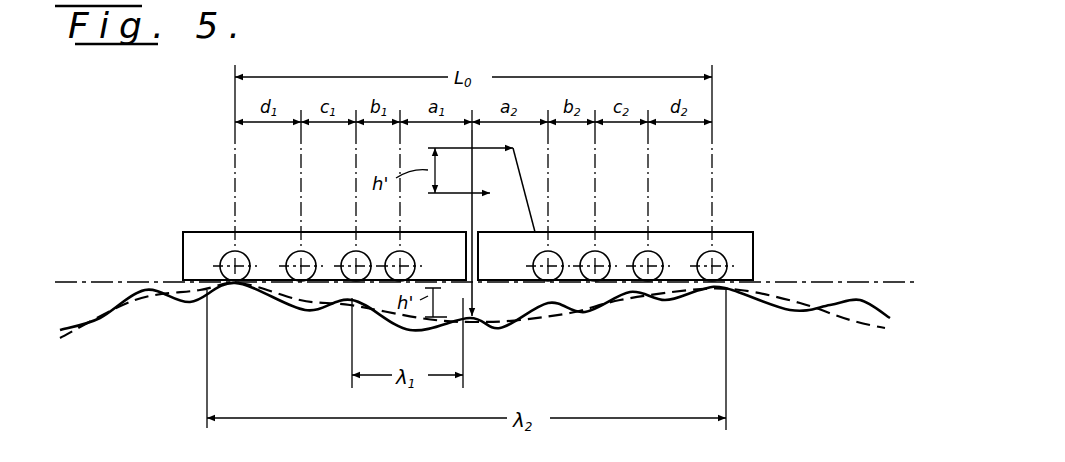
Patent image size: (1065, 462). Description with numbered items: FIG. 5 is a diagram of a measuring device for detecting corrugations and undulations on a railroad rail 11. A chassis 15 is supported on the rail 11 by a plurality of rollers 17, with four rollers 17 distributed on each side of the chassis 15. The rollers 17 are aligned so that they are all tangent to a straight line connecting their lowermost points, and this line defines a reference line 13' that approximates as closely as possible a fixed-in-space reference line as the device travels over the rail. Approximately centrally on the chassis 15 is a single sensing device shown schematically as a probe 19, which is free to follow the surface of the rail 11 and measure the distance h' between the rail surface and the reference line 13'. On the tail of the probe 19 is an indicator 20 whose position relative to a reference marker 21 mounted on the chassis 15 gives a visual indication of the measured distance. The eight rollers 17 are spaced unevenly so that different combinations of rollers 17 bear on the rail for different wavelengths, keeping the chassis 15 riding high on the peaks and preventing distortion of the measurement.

The railroad rail 11 is at (140, 283).
The reference line 13' is at (497, 239).
The chassis 15 is at (181, 243).
The rollers 17 is at (242, 252).
The probe 19 is at (500, 324).
The indicator 20 is at (483, 200).
The reference marker 21 is at (507, 150).